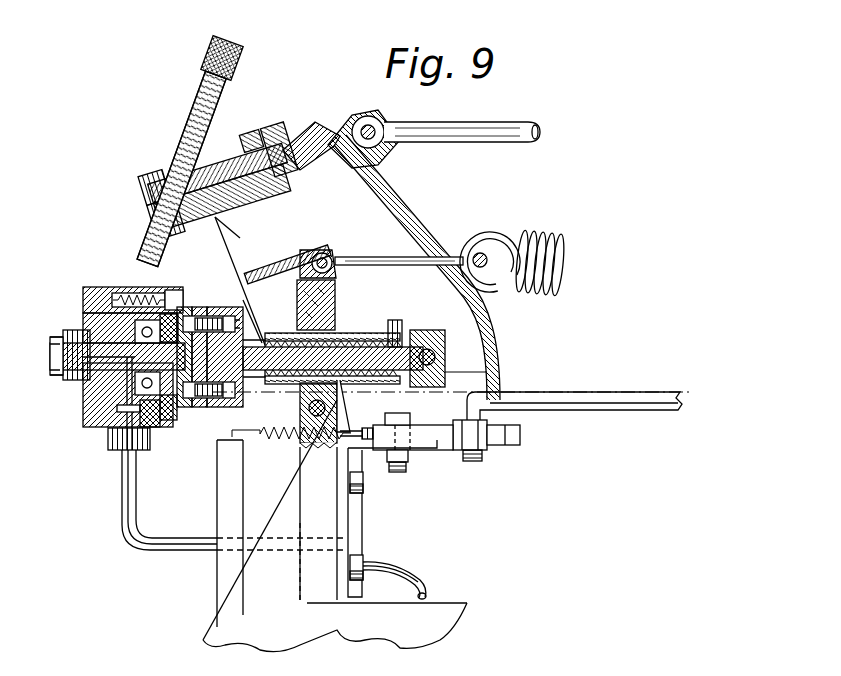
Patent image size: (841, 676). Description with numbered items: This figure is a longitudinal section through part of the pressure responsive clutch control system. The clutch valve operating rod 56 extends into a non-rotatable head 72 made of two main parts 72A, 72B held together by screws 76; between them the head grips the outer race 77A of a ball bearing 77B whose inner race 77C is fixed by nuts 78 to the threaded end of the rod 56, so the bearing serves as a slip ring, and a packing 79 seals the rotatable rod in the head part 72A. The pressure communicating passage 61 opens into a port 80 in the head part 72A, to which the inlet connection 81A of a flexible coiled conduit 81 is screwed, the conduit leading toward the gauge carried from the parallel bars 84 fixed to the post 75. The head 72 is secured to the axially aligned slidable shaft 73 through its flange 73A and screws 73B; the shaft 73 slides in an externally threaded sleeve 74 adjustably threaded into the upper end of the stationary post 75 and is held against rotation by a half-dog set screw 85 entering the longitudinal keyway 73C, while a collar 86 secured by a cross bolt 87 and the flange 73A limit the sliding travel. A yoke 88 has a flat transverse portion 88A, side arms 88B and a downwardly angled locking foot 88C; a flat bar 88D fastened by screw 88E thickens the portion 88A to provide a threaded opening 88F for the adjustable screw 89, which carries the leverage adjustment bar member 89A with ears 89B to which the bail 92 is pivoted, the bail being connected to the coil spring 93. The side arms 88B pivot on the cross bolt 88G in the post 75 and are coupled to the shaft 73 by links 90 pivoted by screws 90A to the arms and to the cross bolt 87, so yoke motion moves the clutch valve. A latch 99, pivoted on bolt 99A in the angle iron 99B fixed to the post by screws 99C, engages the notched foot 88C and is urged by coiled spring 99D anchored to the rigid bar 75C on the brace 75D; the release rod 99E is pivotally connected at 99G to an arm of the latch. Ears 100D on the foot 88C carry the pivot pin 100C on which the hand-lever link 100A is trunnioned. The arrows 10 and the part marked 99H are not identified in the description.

The direction arrows 10 is at (173, 444).
The clutch valve operating rod 56 is at (66, 347).
The clutch fluid working pressure communicating passage 61 is at (57, 372).
The non-rotatable head 72 is at (105, 286).
The head part 72A is at (102, 424).
The head part 72B is at (160, 428).
The shaft 73 is at (250, 350).
The flange 73A is at (215, 314).
The screws 73B is at (228, 382).
The longitudinal keyway 73C is at (245, 281).
The externally threaded sleeve 74 is at (372, 333).
The stationary post 75 is at (331, 300).
The rigid bar 75C is at (228, 517).
The brace 75D is at (225, 633).
The screws 76 is at (178, 294).
The outer race 77A is at (146, 328).
The ball bearing 77B is at (143, 334).
The inner race 77C is at (180, 316).
The nuts 78 is at (170, 410).
The packing 79 is at (140, 385).
The port 80 is at (134, 377).
The flexible coiled conduit 81 is at (128, 492).
The fluid pressure inlet connection 81A is at (112, 442).
The parallel bars 84 is at (432, 604).
The half-dog set screw 85 is at (396, 320).
The collar 86 is at (447, 312).
The cross bolt 87 is at (446, 356).
The yoke 88 is at (138, 202).
The flat transverse portion 88A is at (213, 164).
The side arms 88B is at (240, 238).
The clutch neutral operation locking foot 88C is at (398, 222).
The flat bar 88D is at (150, 218).
The screw 88E is at (147, 174).
The threaded opening 88F is at (262, 173).
The cross bolt 88G is at (326, 406).
The adjustable screw 89 is at (233, 80).
The leverage adjustment bar member 89A is at (310, 247).
The ears 89B is at (282, 138).
The links 90 is at (357, 391).
The screws 90A is at (288, 320).
The bail 92 is at (352, 257).
The coil spring 93 is at (548, 232).
The latch 99 is at (521, 436).
The bolt 99A is at (400, 462).
The latch-supporting angle iron 99B is at (440, 456).
The screws 99C is at (364, 479).
The coiled spring 99D is at (291, 447).
The clutch neutral operation release rod 99E is at (622, 398).
The pivotal connection 99G is at (486, 452).
The nut 99H is at (358, 449).
The link 100A is at (482, 130).
The pivot pin 100C is at (386, 126).
The ears 100D is at (362, 118).